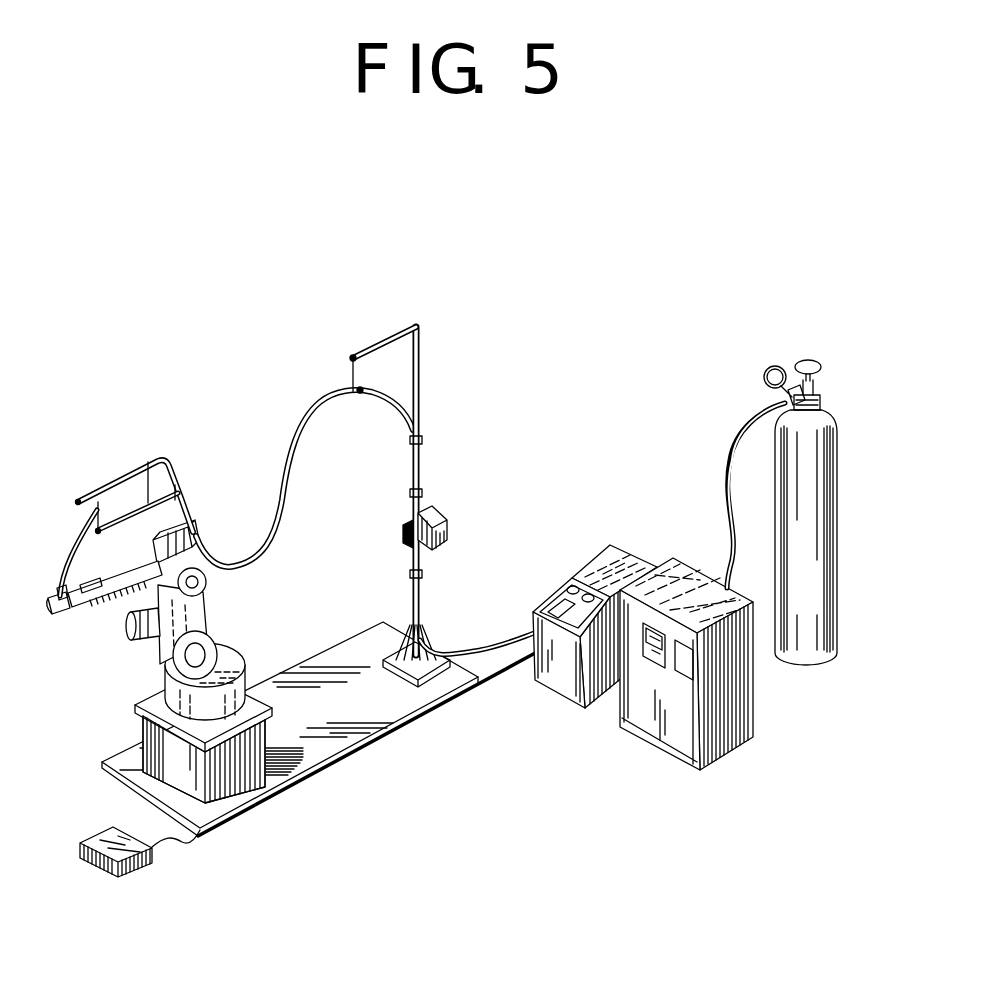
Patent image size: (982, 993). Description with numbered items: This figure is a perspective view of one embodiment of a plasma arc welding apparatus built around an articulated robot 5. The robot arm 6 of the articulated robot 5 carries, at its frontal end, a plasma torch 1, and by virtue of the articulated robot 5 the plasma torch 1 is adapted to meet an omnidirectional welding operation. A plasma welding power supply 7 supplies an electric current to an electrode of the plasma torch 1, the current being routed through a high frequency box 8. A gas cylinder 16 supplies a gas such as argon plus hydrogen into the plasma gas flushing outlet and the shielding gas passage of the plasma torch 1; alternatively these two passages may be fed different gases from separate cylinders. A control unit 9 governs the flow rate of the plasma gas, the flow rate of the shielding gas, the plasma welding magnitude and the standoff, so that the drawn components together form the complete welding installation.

The plasma torch 1 is at (58, 605).
The articulated robot 5 is at (253, 692).
The robot arm 6 is at (131, 560).
The plasma welding power supply 7 is at (552, 668).
The high frequency box 8 is at (443, 512).
The control unit 9 is at (663, 712).
The gas cylinder 16 is at (832, 593).